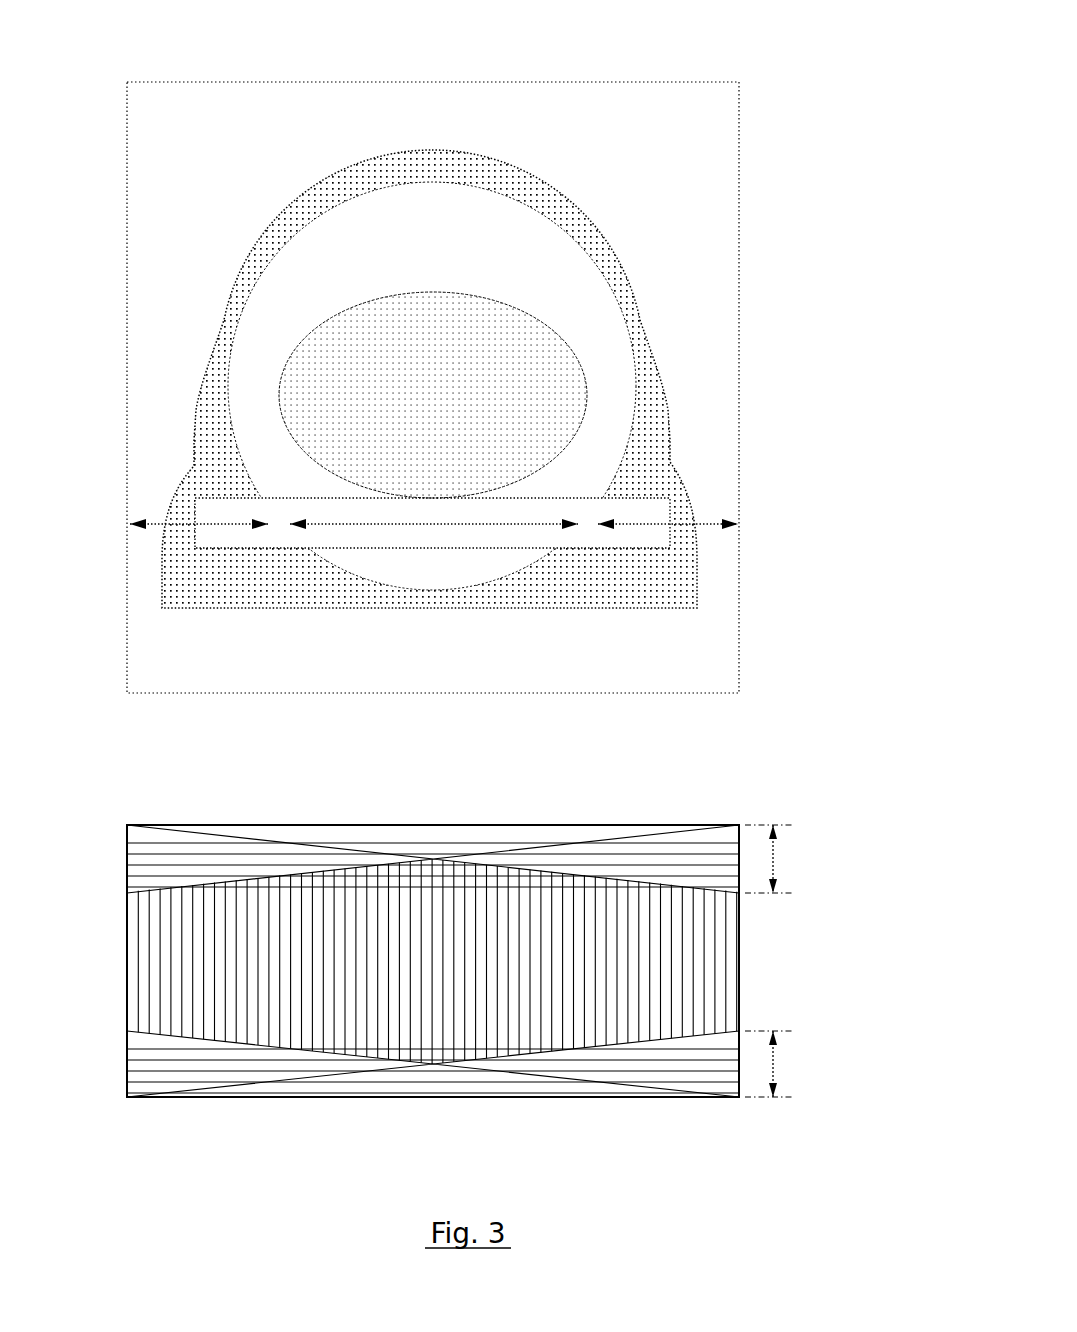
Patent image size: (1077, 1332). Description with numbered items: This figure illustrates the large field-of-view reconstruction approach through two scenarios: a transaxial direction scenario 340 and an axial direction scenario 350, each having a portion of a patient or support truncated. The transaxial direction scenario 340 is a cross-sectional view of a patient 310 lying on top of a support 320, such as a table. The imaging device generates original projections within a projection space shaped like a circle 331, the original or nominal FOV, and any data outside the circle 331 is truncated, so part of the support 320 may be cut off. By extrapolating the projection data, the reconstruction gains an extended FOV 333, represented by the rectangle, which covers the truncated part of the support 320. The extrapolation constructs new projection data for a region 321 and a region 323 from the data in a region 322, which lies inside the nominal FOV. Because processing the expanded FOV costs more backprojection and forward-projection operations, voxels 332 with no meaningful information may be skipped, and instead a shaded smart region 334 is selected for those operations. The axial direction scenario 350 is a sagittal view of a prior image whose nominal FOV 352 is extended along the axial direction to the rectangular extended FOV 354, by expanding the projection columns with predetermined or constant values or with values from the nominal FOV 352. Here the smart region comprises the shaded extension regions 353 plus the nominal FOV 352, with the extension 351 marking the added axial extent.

The patient 310 is at (433, 395).
The support 320 is at (655, 550).
The region 321 is at (199, 534).
The region 322 is at (434, 534).
The region 323 is at (668, 534).
The circle 331 is at (375, 190).
The voxels 332 is at (618, 112).
The extended FOV 333 is at (670, 428).
The smart region 334 is at (524, 368).
The transaxial direction scenario 340 is at (507, 388).
The axial direction scenario 350 is at (456, 1011).
The extension 351 is at (807, 961).
The nominal FOV 352 is at (437, 961).
The extension regions 353 is at (165, 1073).
The extended FOV 354 is at (593, 1098).